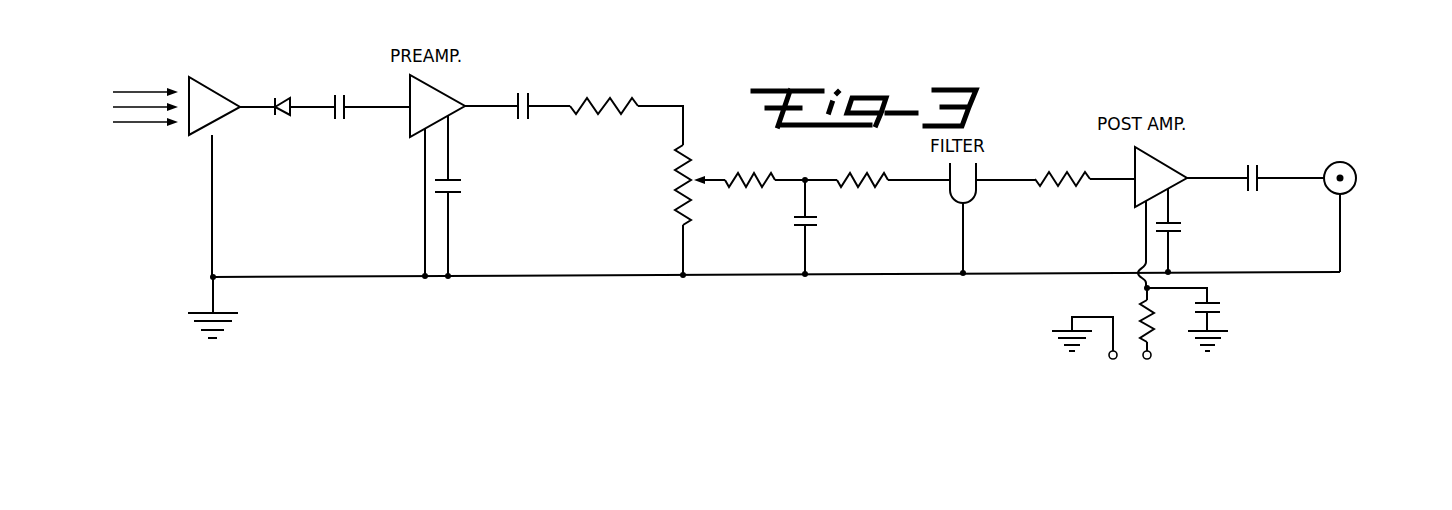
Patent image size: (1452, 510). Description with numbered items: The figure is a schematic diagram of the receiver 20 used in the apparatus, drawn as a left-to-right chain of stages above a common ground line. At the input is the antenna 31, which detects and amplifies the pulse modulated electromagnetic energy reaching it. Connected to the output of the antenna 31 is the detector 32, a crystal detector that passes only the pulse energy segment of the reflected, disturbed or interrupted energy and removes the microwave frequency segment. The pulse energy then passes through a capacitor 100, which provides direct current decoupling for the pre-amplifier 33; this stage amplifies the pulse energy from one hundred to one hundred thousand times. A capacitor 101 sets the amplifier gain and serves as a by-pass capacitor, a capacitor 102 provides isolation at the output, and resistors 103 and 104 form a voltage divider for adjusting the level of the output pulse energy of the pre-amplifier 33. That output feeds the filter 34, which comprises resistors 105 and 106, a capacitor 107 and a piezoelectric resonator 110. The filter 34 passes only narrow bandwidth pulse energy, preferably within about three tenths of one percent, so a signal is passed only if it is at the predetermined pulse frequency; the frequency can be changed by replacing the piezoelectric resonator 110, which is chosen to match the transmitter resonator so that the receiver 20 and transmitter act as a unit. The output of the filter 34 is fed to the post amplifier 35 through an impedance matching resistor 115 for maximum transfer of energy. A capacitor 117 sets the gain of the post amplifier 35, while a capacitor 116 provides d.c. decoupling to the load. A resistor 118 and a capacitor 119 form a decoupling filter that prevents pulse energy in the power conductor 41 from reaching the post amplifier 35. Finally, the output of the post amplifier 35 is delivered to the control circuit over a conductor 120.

The receiver 20 is at (674, 287).
The antenna 31 is at (194, 85).
The detector 32 is at (284, 120).
The pre-amplifier 33 is at (390, 142).
The filter 34 is at (783, 156).
The post amplifier 35 is at (1196, 158).
The power conductor 41 is at (1152, 351).
The capacitor 100 is at (352, 82).
The capacitor 101 is at (451, 194).
The capacitor 102 is at (517, 110).
The resistor 103 is at (642, 83).
The resistor 104 is at (676, 177).
The resistor 105 is at (758, 185).
The resistor 106 is at (861, 185).
The capacitor 107 is at (794, 226).
The piezoelectric resonator 110 is at (950, 194).
The impedance matching resistor 115 is at (1041, 190).
The capacitor 116 is at (1258, 190).
The capacitor 117 is at (1180, 224).
The resistor 118 is at (1141, 306).
The capacitor 119 is at (1216, 305).
The conductor 120 is at (1348, 167).